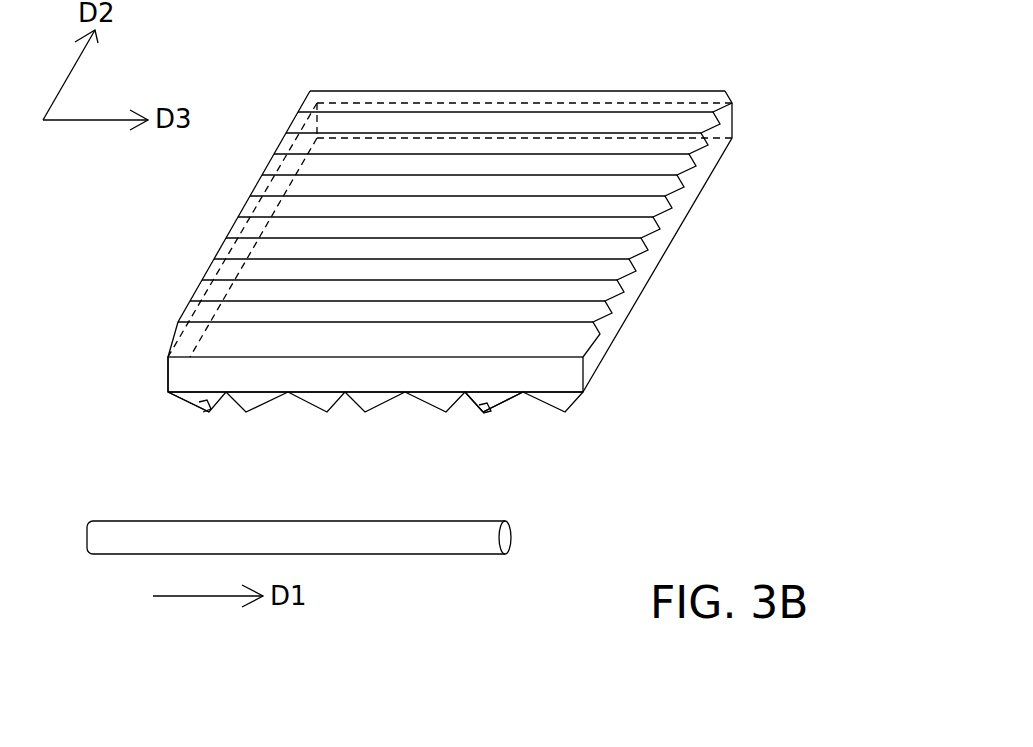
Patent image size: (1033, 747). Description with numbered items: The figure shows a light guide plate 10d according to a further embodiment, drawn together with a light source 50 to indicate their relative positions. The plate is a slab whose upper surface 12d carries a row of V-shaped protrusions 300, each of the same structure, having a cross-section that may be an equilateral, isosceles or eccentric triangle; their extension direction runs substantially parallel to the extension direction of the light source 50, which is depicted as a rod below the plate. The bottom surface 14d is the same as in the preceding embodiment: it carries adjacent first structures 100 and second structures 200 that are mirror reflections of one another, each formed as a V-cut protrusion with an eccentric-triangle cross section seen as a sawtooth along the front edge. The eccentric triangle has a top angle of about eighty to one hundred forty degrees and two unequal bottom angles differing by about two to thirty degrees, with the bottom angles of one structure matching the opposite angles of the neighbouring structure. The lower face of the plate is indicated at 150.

The light guide plate 10d is at (861, 56).
The upper surface 12d is at (663, 73).
The bottom surface 14d is at (608, 374).
The V-shaped protrusions 300 is at (630, 223).
The first structure 100 is at (182, 403).
The second structure 200 is at (241, 400).
The bottom surface 150 is at (407, 400).
The light source 50 is at (513, 540).